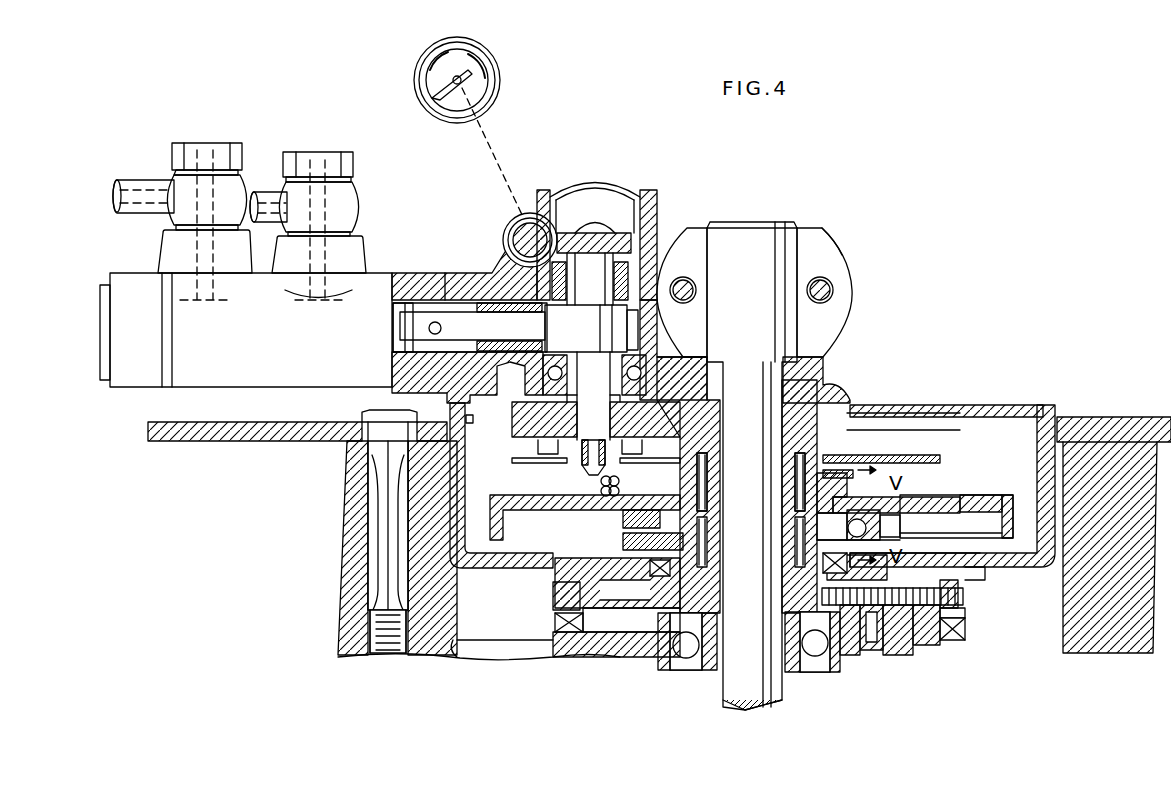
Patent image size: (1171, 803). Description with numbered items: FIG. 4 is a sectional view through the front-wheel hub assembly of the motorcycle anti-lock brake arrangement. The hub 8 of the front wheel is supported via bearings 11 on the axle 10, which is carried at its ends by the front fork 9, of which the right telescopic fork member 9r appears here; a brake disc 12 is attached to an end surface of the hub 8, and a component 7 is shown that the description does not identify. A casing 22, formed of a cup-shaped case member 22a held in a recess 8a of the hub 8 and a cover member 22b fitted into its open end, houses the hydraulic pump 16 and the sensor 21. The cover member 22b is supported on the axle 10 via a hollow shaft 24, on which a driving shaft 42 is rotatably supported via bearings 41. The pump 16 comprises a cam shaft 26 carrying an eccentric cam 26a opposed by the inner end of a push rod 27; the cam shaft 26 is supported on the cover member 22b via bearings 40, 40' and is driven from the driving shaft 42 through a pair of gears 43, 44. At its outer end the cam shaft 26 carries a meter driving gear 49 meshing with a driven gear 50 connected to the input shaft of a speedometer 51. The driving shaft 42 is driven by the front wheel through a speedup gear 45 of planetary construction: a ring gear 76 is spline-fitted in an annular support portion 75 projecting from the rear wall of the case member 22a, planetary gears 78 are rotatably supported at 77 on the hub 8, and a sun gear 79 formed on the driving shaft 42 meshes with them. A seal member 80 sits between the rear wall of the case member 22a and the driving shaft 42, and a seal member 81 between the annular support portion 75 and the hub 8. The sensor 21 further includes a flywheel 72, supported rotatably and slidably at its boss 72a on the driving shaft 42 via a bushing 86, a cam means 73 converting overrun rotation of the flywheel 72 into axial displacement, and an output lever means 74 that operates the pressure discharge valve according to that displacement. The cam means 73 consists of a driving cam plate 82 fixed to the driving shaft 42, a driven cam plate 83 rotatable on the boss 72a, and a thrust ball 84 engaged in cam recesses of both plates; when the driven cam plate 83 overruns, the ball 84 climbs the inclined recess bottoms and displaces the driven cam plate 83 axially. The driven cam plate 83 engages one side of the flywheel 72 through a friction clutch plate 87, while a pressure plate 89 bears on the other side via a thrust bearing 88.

The valve housing 7 is at (431, 268).
The hub 8 is at (351, 522).
The recess 8a is at (453, 645).
The front fork 9 is at (853, 276).
The right telescopic fork member 9r is at (832, 258).
The axle 10 is at (755, 617).
The bearings 11 is at (687, 655).
The brake disc 12 is at (217, 441).
The hydraulic pump 16 is at (390, 327).
The sensor 21 is at (979, 494).
The casing 22 is at (961, 447).
The case member 22a is at (1047, 405).
The cover member 22b is at (996, 405).
The hollow shaft 24 is at (713, 410).
The cam shaft 26 is at (594, 396).
The eccentric cam 26a is at (553, 327).
The push rod 27 is at (458, 271).
The bearing 40 is at (622, 276).
The bearing 40' is at (673, 350).
The bearings 41 is at (797, 474).
The driving shaft 42 is at (793, 428).
The gear 43 is at (838, 402).
The gear 44 is at (512, 415).
The speedup gear 45 is at (958, 597).
The meter driving gear 49 is at (625, 233).
The driven gear 50 is at (512, 226).
The speedometer 51 is at (500, 80).
The flywheel 72 is at (1007, 497).
The boss 72a is at (828, 516).
The cam means 73 is at (882, 526).
The output lever means 74 is at (862, 459).
The annular support portion 75 is at (966, 630).
The ring gear 76 is at (966, 608).
The rotatable support 77 is at (872, 640).
The planetary gears 78 is at (905, 607).
The sun gear 79 is at (668, 594).
The seal member 80 is at (668, 576).
The seal member 81 is at (566, 632).
The driving cam plate 82 is at (623, 541).
The driven cam plate 83 is at (623, 520).
The thrust ball 84 is at (866, 524).
The bushing 86 is at (825, 490).
The friction clutch plate 87 is at (700, 522).
The thrust bearing 88 is at (597, 489).
The pressure plate 89 is at (842, 478).